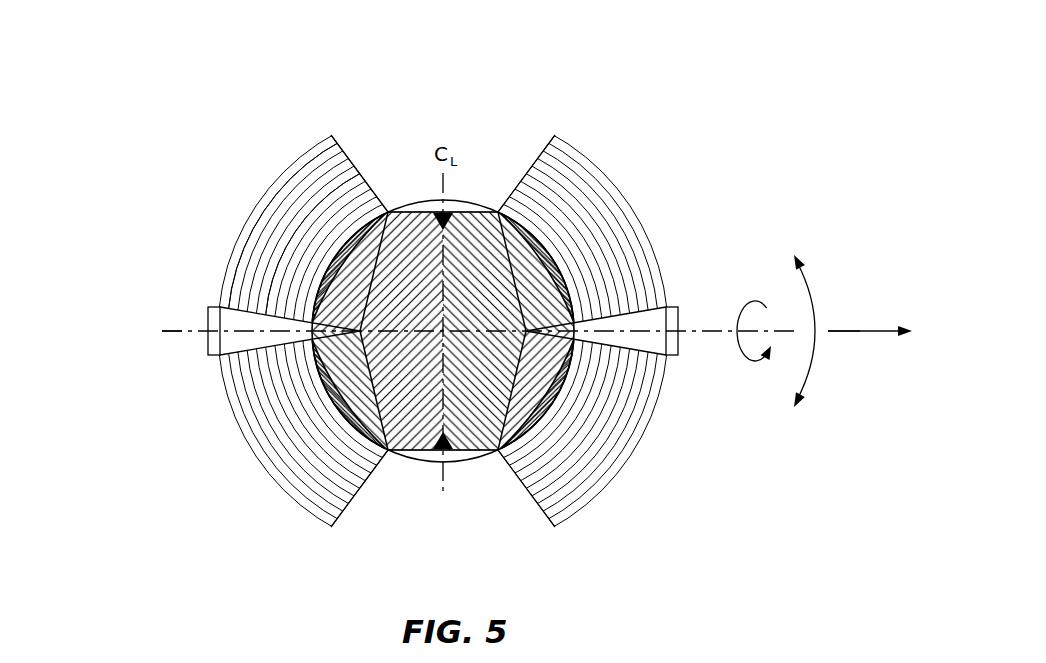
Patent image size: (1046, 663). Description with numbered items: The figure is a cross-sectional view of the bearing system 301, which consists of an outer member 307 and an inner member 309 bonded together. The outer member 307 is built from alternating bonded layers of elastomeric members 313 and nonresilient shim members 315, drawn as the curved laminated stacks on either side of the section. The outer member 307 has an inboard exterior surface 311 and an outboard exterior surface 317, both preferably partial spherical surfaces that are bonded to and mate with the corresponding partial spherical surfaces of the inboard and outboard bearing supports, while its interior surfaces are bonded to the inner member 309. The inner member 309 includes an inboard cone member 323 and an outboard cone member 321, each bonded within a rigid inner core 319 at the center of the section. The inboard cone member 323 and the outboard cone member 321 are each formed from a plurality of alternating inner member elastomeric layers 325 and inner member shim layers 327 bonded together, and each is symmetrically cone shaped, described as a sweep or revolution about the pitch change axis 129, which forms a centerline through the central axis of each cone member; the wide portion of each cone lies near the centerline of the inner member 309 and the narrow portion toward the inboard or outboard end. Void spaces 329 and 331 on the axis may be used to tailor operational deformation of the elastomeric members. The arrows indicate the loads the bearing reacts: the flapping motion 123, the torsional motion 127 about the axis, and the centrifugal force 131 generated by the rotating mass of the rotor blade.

The bearing system 301 is at (328, 68).
The outer member 307 is at (611, 155).
The inner member 309 is at (476, 172).
The inboard exterior surface 311 is at (225, 263).
The elastomeric members 313 is at (253, 218).
The nonresilient shim members 315 is at (290, 178).
The outboard exterior surface 317 is at (658, 272).
The rigid inner core 319 is at (467, 381).
The outboard cone member 321 is at (486, 472).
The inboard cone member 323 is at (395, 466).
The inner member elastomeric layers 325 is at (406, 219).
The inner member shim layers 327 is at (420, 444).
The void space 329 is at (208, 320).
The void space 331 is at (680, 310).
The flapping motion 123 is at (817, 312).
The torsional motion 127 is at (755, 361).
The pitch change axis 129 is at (175, 331).
The centrifugal force 131 is at (838, 331).